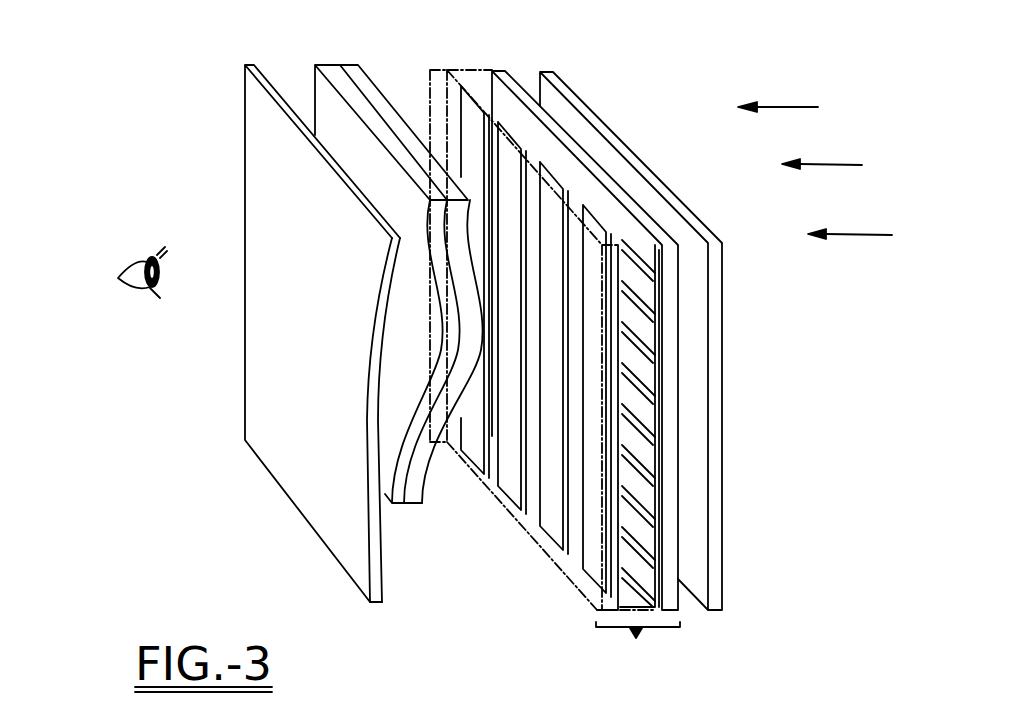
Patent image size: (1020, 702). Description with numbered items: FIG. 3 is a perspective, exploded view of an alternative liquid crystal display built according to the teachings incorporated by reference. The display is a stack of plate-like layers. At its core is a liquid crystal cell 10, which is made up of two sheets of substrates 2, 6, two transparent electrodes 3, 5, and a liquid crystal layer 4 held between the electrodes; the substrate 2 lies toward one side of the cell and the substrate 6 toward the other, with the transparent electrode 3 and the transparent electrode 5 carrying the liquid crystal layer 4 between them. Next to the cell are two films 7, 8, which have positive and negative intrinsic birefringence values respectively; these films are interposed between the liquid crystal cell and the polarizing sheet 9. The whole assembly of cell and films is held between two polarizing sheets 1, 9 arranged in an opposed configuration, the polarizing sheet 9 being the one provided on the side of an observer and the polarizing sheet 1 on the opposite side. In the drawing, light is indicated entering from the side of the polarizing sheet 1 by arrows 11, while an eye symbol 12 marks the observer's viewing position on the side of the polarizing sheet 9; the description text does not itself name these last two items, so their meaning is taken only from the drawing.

The polarizing sheet 1 is at (553, 72).
The substrate 2 is at (500, 70).
The transparent electrode 3 is at (658, 380).
The liquid crystal layer 4 is at (474, 72).
The transparent electrode 5 is at (517, 137).
The substrate 6 is at (430, 70).
The film 7 is at (340, 65).
The film 8 is at (321, 65).
The polarizing sheet 9 is at (247, 65).
The liquid crystal cell 10 is at (638, 646).
The incident light 11 is at (852, 163).
The viewer eye 12 is at (147, 262).